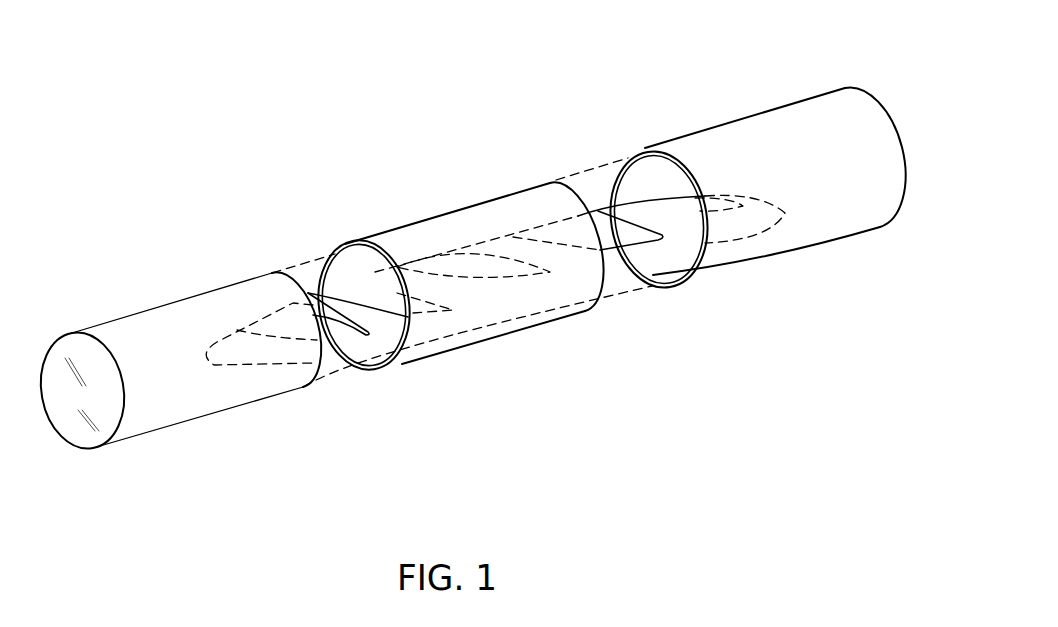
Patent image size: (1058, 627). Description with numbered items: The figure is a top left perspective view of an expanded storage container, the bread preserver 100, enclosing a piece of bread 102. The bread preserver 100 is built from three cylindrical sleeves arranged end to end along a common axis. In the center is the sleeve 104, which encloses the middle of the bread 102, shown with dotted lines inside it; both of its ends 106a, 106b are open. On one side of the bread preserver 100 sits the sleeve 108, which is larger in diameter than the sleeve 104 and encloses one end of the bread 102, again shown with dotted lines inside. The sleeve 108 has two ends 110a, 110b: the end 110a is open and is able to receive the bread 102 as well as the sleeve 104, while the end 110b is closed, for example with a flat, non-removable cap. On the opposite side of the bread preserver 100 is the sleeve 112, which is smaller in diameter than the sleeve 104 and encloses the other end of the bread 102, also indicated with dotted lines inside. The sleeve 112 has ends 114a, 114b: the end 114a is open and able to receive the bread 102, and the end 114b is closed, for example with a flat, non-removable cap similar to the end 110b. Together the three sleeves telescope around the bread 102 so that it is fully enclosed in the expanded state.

The bread preserver 100 is at (809, 57).
The bread 102 is at (592, 210).
The sleeve 104 is at (445, 212).
The end 106a is at (338, 247).
The end 106b is at (562, 182).
The sleeve 108 is at (780, 257).
The end 110a is at (631, 153).
The end 110b is at (888, 113).
The sleeve 112 is at (163, 302).
The end 114a is at (282, 272).
The end 114b is at (82, 450).